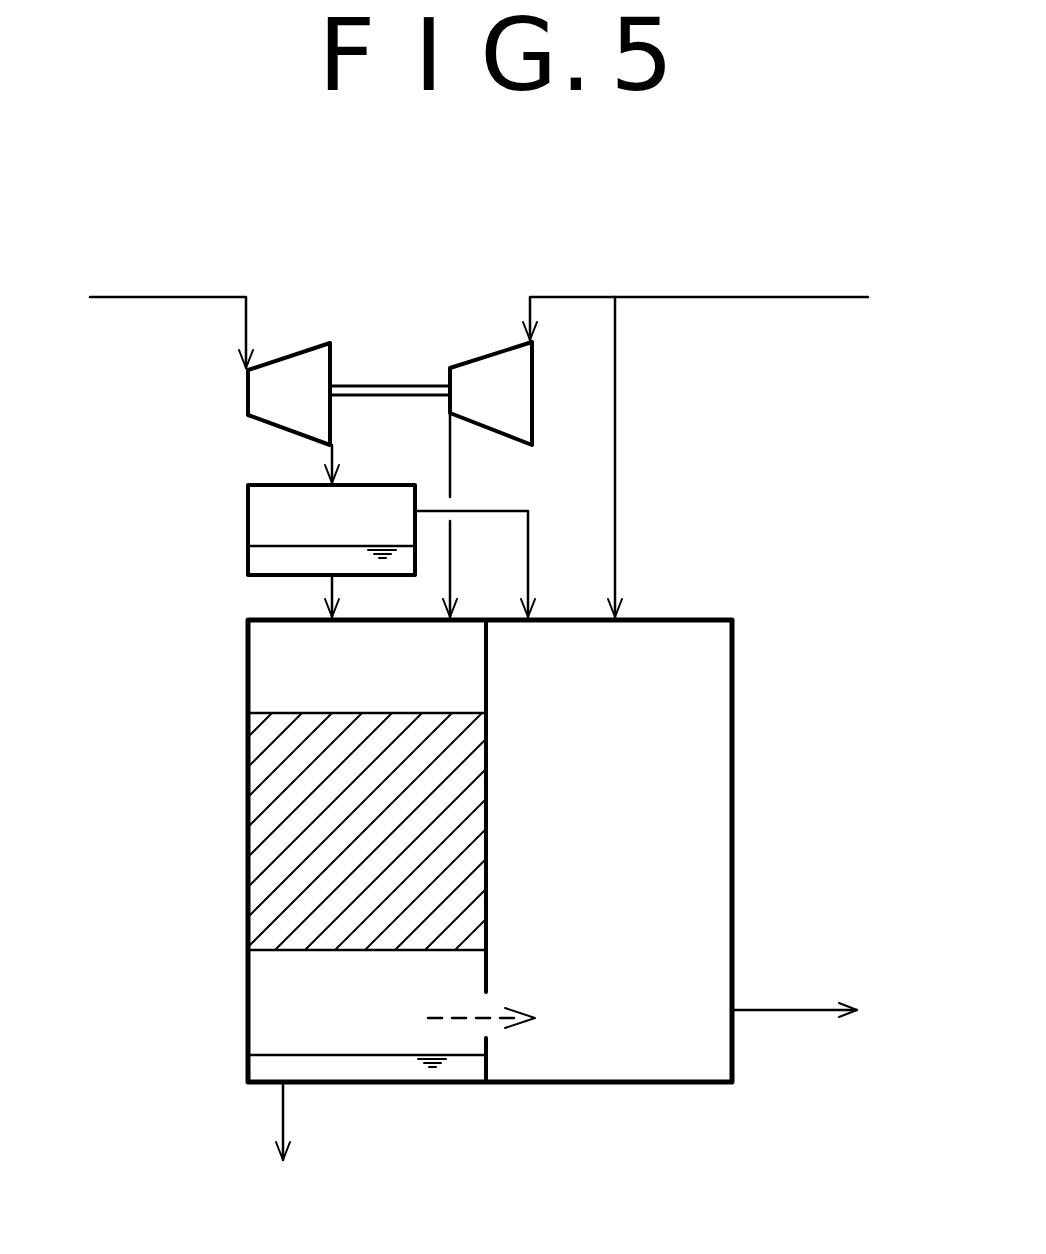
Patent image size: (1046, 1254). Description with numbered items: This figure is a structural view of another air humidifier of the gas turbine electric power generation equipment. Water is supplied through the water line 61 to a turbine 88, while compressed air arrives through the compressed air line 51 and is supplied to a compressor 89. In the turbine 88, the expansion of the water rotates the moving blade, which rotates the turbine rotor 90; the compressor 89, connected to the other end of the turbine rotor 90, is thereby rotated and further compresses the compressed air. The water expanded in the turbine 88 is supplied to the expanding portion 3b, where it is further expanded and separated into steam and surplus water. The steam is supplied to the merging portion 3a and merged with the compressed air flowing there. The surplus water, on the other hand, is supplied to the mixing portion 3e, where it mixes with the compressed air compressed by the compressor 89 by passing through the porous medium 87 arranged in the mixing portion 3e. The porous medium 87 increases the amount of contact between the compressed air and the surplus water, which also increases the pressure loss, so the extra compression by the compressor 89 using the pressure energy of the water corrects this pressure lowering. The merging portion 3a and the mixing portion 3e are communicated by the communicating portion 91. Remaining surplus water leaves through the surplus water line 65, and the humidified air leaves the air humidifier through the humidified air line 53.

The water line 61 is at (171, 332).
The turbine 88 is at (295, 367).
The turbine rotor 90 is at (387, 383).
The compressor 89 is at (490, 372).
The compressed air line 51 is at (696, 457).
The expanding portion 3b is at (248, 511).
The porous medium 87 is at (248, 843).
The mixing portion 3e is at (367, 678).
The merging portion 3a is at (562, 851).
The communicating portion 91 is at (502, 1038).
The surplus water line 65 is at (285, 1110).
The humidified air line 53 is at (790, 1012).